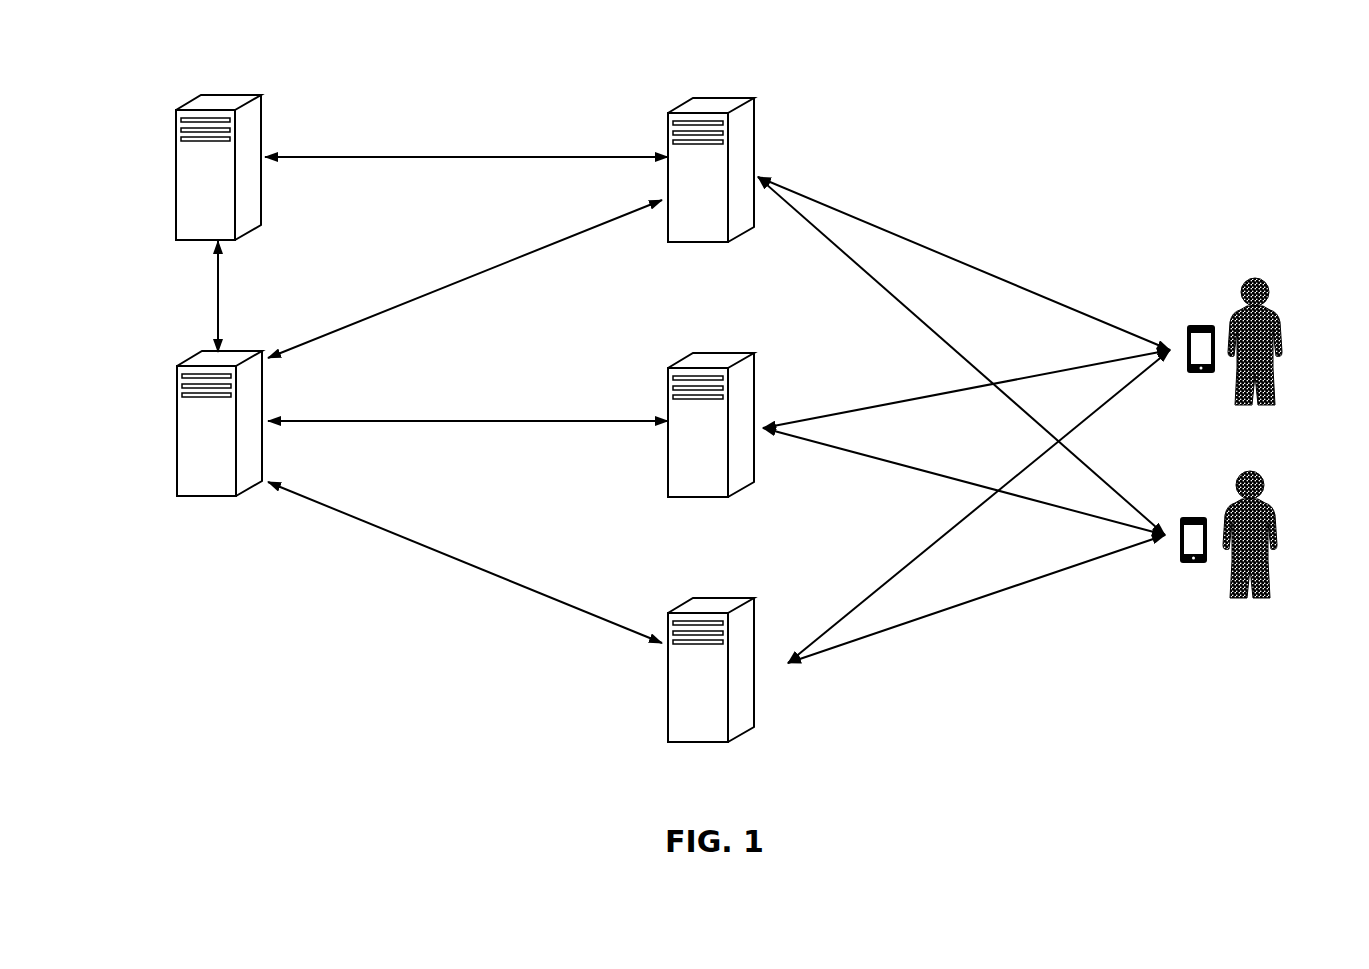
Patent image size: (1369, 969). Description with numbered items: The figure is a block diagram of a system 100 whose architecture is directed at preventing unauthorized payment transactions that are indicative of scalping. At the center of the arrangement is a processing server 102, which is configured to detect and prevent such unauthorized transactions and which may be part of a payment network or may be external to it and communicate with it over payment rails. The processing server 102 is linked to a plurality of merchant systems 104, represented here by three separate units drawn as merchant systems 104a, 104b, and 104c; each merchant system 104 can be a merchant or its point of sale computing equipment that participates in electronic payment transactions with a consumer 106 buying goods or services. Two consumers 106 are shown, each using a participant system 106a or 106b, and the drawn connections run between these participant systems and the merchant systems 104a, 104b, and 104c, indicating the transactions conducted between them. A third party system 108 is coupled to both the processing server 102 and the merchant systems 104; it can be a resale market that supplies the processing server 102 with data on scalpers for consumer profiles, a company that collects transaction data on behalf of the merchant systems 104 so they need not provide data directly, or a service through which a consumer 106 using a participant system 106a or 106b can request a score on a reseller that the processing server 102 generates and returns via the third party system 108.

The system 100 is at (1264, 63).
The processing server 102 is at (177, 388).
The merchant systems 104 is at (721, 392).
The merchant system 104a is at (758, 115).
The merchant system 104b is at (758, 372).
The merchant system 104c is at (665, 705).
The consumer 106 is at (1282, 428).
The participant system 106a is at (1200, 325).
The participant system 106b is at (1187, 517).
The third party system 108 is at (265, 118).